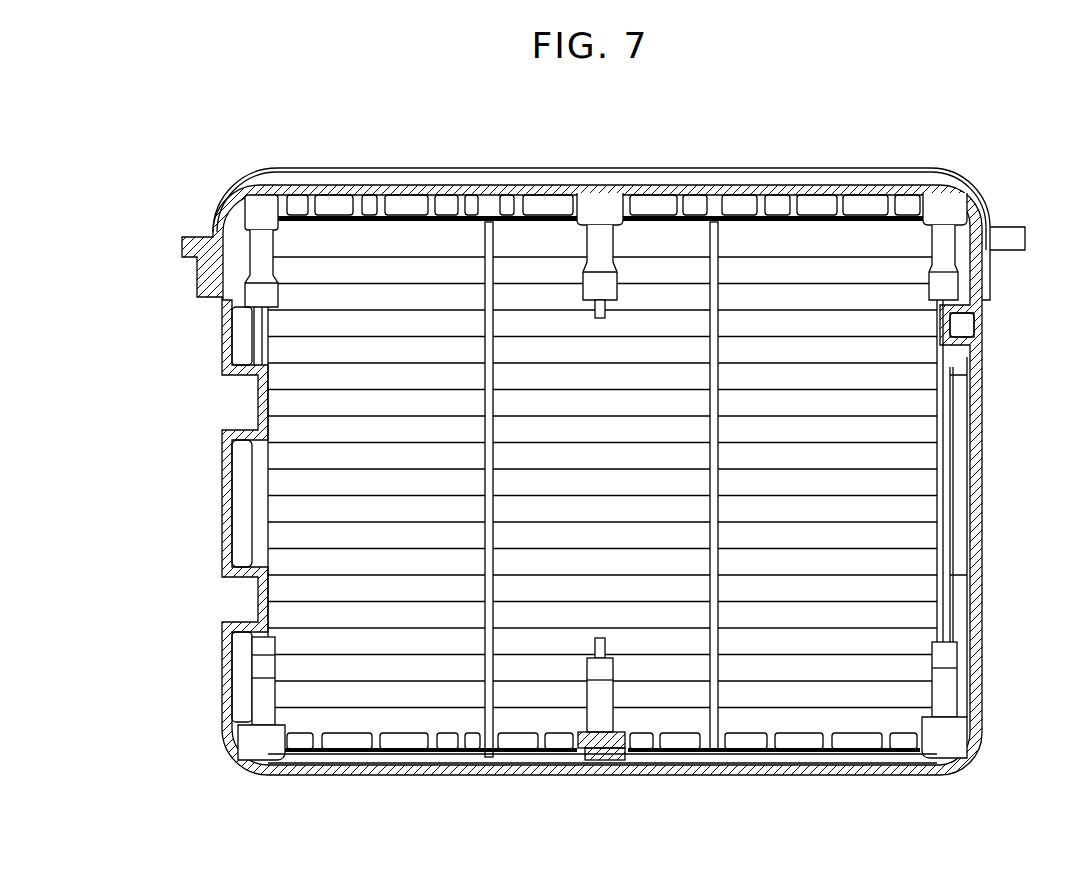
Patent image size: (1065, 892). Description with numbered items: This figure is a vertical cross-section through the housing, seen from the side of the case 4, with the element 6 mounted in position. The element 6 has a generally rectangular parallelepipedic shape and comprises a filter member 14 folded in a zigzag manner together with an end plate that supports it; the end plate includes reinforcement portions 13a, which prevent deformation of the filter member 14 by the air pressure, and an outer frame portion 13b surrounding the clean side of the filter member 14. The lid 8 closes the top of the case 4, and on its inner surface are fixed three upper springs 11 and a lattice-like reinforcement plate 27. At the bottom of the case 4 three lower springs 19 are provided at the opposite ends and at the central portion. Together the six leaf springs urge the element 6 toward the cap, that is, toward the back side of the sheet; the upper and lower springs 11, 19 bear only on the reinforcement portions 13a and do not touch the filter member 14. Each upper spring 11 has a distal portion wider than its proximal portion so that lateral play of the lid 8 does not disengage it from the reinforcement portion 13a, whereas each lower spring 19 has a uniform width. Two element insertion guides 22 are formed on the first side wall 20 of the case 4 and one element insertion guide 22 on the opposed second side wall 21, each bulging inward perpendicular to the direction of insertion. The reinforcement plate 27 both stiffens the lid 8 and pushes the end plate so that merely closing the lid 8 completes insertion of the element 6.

The case 4 is at (520, 764).
The element 6 is at (447, 706).
The lid 8 is at (727, 180).
The upper springs 11 is at (258, 240).
The reinforcement portions 13a is at (482, 243).
The outer frame portion 13b is at (347, 752).
The filter member 14 is at (807, 690).
The lower springs 19 is at (262, 706).
The first side wall 20 is at (258, 480).
The second side wall 21 is at (983, 527).
The element insertion guides 22 is at (258, 400).
The reinforcement plate 27 is at (372, 217).